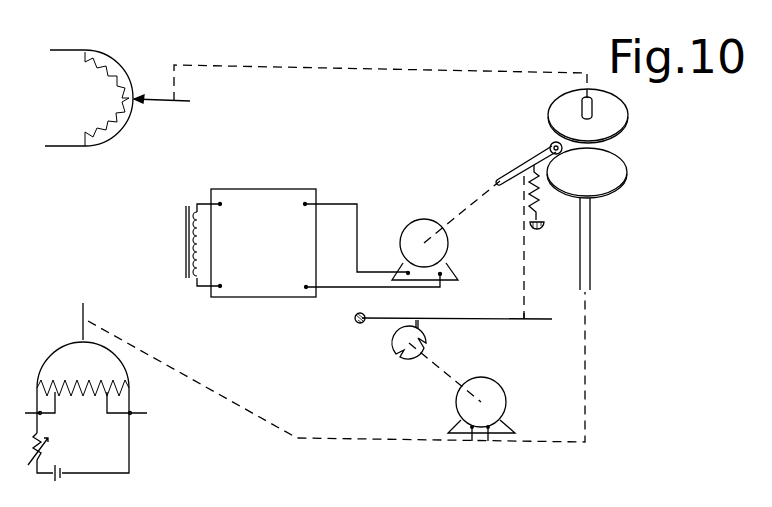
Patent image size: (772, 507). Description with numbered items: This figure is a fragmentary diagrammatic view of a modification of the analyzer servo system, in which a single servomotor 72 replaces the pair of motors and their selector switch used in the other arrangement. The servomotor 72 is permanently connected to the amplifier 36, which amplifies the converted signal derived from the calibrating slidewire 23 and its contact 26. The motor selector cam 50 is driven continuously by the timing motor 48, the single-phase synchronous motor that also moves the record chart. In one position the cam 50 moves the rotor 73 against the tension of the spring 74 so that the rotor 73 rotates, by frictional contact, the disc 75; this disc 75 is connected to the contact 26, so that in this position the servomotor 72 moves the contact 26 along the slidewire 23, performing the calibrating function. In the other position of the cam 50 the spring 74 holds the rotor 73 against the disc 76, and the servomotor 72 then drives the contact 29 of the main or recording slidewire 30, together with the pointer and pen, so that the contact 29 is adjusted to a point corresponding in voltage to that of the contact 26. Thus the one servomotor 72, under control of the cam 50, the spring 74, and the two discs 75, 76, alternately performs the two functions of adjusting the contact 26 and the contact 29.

The slidewire 23 is at (127, 75).
The contact 26 is at (137, 101).
The contact 29 is at (82, 340).
The slidewire 30 is at (43, 360).
The amplifier 36 is at (251, 243).
The timing motor 48 is at (500, 377).
The motor selector cam 50 is at (394, 344).
The servomotor 72 is at (410, 228).
The rotor 73 is at (560, 153).
The spring 74 is at (538, 201).
The disc 75 is at (626, 116).
The disc 76 is at (627, 178).